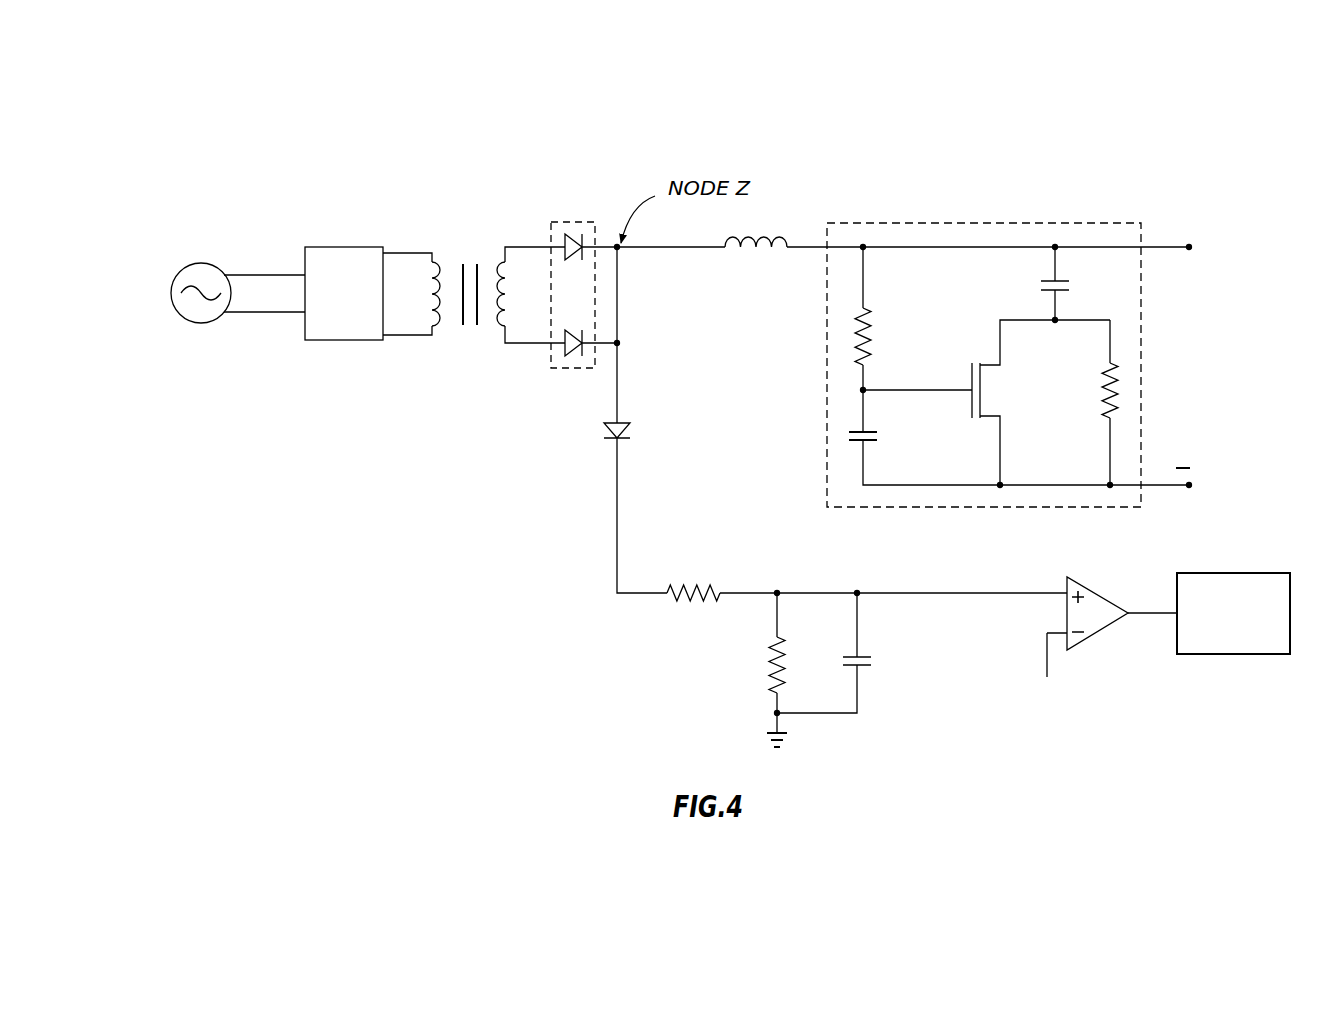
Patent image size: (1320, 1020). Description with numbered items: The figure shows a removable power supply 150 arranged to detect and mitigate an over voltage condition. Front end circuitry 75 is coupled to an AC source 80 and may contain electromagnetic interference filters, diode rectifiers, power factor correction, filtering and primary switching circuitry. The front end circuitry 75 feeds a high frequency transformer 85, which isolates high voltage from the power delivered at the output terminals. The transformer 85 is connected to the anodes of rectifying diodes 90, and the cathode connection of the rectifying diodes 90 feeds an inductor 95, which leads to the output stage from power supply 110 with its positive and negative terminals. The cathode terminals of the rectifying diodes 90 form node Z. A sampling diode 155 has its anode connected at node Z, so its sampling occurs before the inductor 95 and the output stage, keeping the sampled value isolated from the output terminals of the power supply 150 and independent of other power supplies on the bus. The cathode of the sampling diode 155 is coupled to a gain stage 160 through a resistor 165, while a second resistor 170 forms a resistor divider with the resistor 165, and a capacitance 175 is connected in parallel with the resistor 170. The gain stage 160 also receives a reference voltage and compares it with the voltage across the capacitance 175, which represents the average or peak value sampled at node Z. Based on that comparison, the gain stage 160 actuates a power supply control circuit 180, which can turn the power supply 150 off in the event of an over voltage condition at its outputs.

The removable power supply 150 is at (241, 151).
The front end circuitry 75 is at (322, 247).
The AC source 80 is at (175, 310).
The high frequency transformer 85 is at (463, 252).
The rectifying diodes 90 is at (562, 222).
The inductor 95 is at (765, 228).
The power supply 110 is at (1020, 223).
The sampling diode 155 is at (605, 428).
The gain stage 160 is at (1097, 588).
The resistor 165 is at (672, 598).
The second resistor 170 is at (772, 668).
The capacitance 175 is at (862, 670).
The power supply control circuit 180 is at (1248, 655).